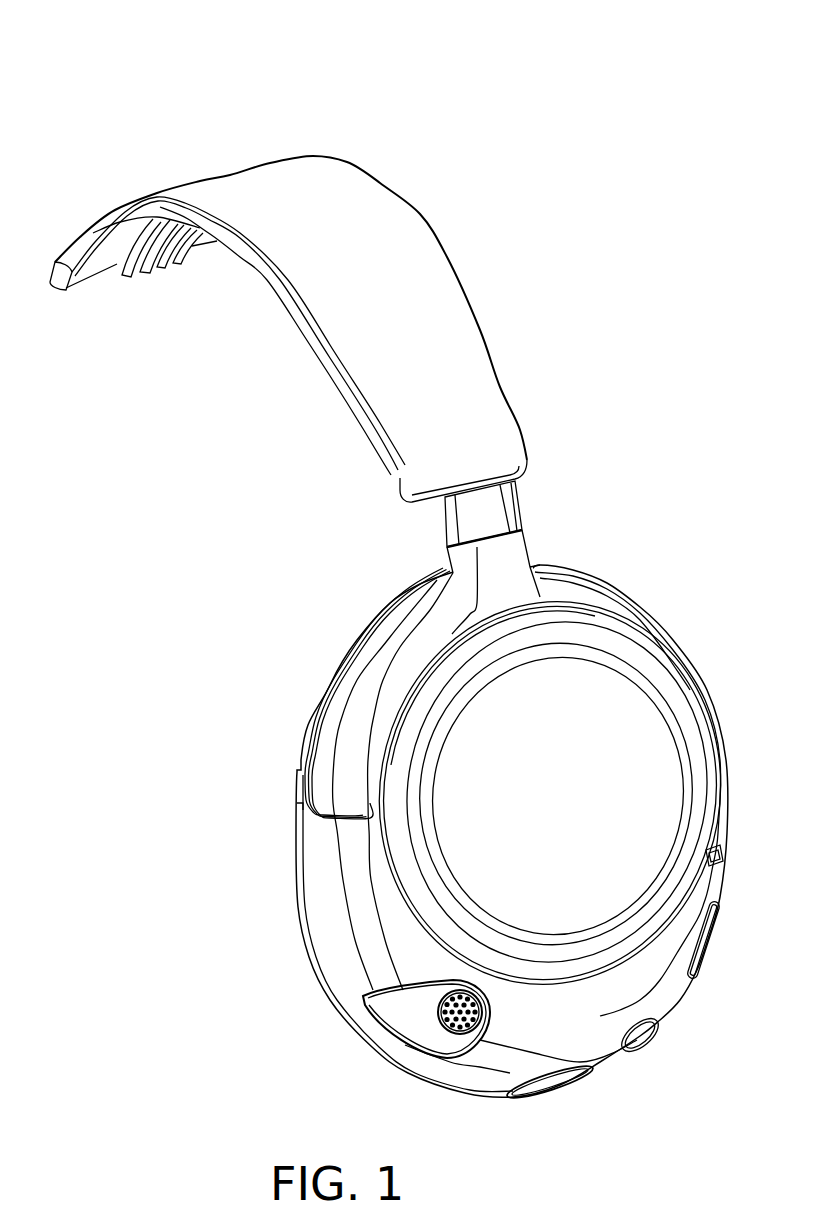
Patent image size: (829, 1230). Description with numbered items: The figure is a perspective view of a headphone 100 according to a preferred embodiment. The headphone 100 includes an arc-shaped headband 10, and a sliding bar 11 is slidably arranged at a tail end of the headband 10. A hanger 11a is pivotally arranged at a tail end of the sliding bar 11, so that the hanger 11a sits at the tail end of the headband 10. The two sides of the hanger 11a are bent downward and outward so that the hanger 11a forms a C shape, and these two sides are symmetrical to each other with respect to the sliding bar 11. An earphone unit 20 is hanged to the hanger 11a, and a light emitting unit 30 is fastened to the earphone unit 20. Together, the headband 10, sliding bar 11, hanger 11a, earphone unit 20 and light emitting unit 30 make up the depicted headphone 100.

The headphone 100 is at (52, 48).
The headband 10 is at (368, 184).
The sliding bar 11 is at (514, 521).
The hanger 11a is at (390, 643).
The earphone unit 20 is at (297, 1000).
The light emitting unit 30 is at (700, 743).